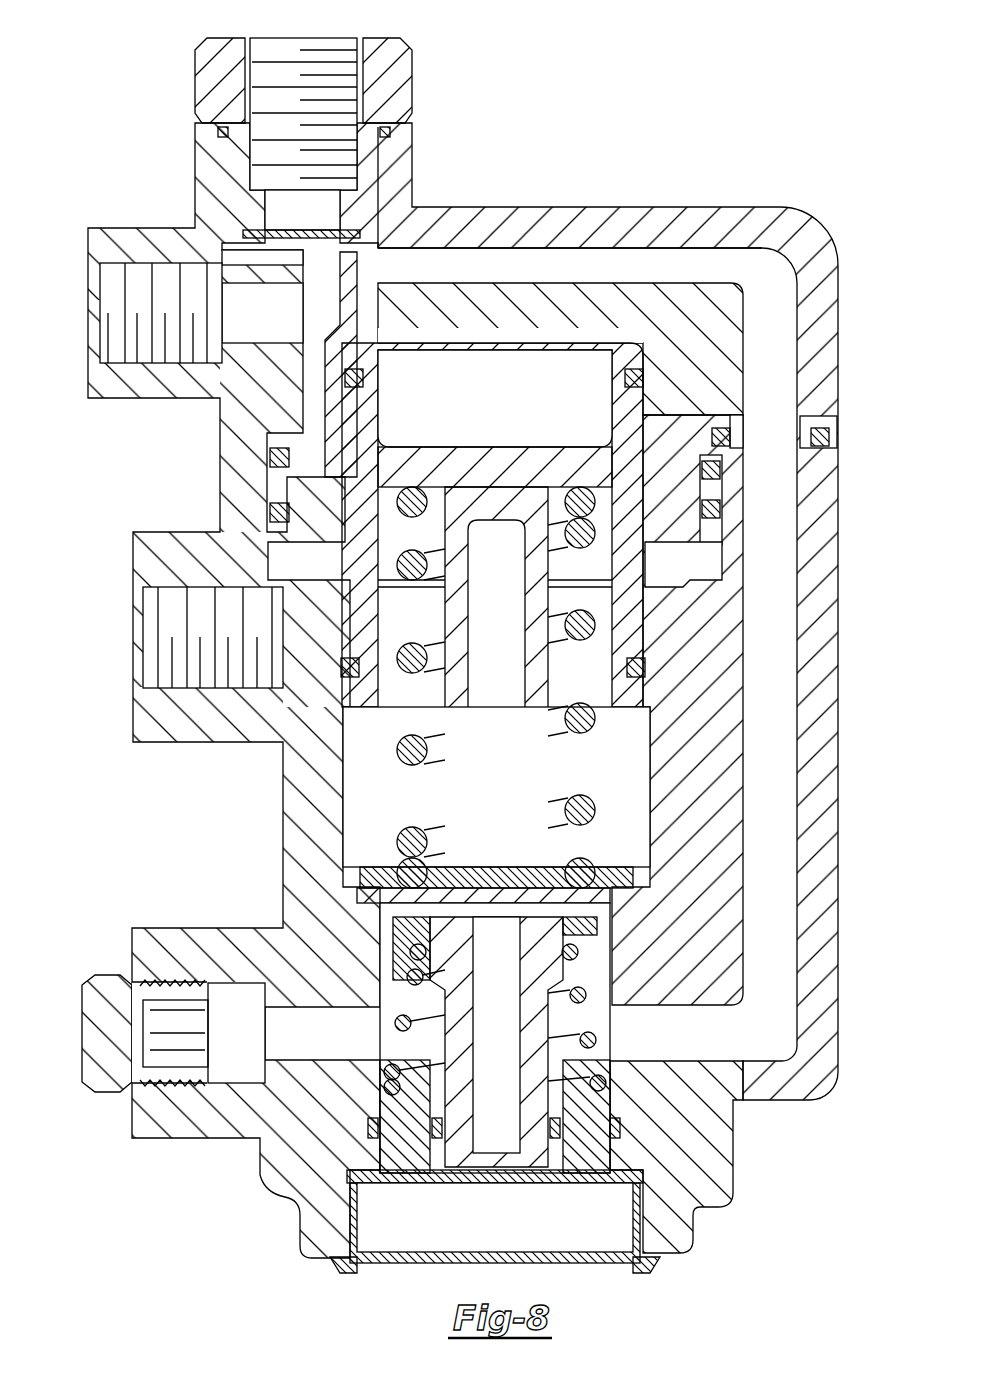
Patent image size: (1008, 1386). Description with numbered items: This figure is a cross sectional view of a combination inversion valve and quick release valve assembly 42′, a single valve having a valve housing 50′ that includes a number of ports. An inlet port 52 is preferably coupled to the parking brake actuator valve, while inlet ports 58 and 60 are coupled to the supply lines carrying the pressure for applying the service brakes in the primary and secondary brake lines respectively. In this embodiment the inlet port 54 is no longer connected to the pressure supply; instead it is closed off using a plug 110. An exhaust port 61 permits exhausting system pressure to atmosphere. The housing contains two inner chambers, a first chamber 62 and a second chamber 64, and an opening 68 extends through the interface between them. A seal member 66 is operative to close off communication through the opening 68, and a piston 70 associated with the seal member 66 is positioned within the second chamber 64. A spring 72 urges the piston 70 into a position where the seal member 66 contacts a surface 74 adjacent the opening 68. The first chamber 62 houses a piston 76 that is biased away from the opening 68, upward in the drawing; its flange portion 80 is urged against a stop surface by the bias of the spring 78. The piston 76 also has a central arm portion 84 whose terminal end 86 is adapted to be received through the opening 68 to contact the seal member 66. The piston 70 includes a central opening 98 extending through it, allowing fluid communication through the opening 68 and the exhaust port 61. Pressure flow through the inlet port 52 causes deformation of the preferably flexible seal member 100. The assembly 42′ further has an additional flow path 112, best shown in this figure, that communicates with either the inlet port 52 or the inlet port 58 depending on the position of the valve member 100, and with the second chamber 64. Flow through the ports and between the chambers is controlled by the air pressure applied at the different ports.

The combination inversion valve and quick release valve assembly 42′ is at (637, 180).
The valve housing 50′ is at (845, 328).
The inlet port 52 is at (265, 38).
The inlet port 54 is at (233, 985).
The inlet port 58 is at (106, 272).
The inlet port 60 is at (163, 687).
The exhaust port 61 is at (500, 1262).
The first chamber 62 is at (360, 773).
The second chamber 64 is at (588, 1017).
The seal member 66 is at (612, 916).
The opening 68 is at (557, 888).
The piston 70 is at (457, 1097).
The spring 72 is at (380, 1047).
The surface 74 is at (365, 940).
The piston 76 is at (588, 472).
The spring 78 is at (578, 628).
The flange portion 80 is at (320, 508).
The central arm portion 84 is at (540, 768).
The terminal end 86 is at (530, 850).
The central opening 98 is at (478, 1100).
The seal member 100 is at (330, 238).
The plug 110 is at (92, 1073).
The flow path 112 is at (486, 272).